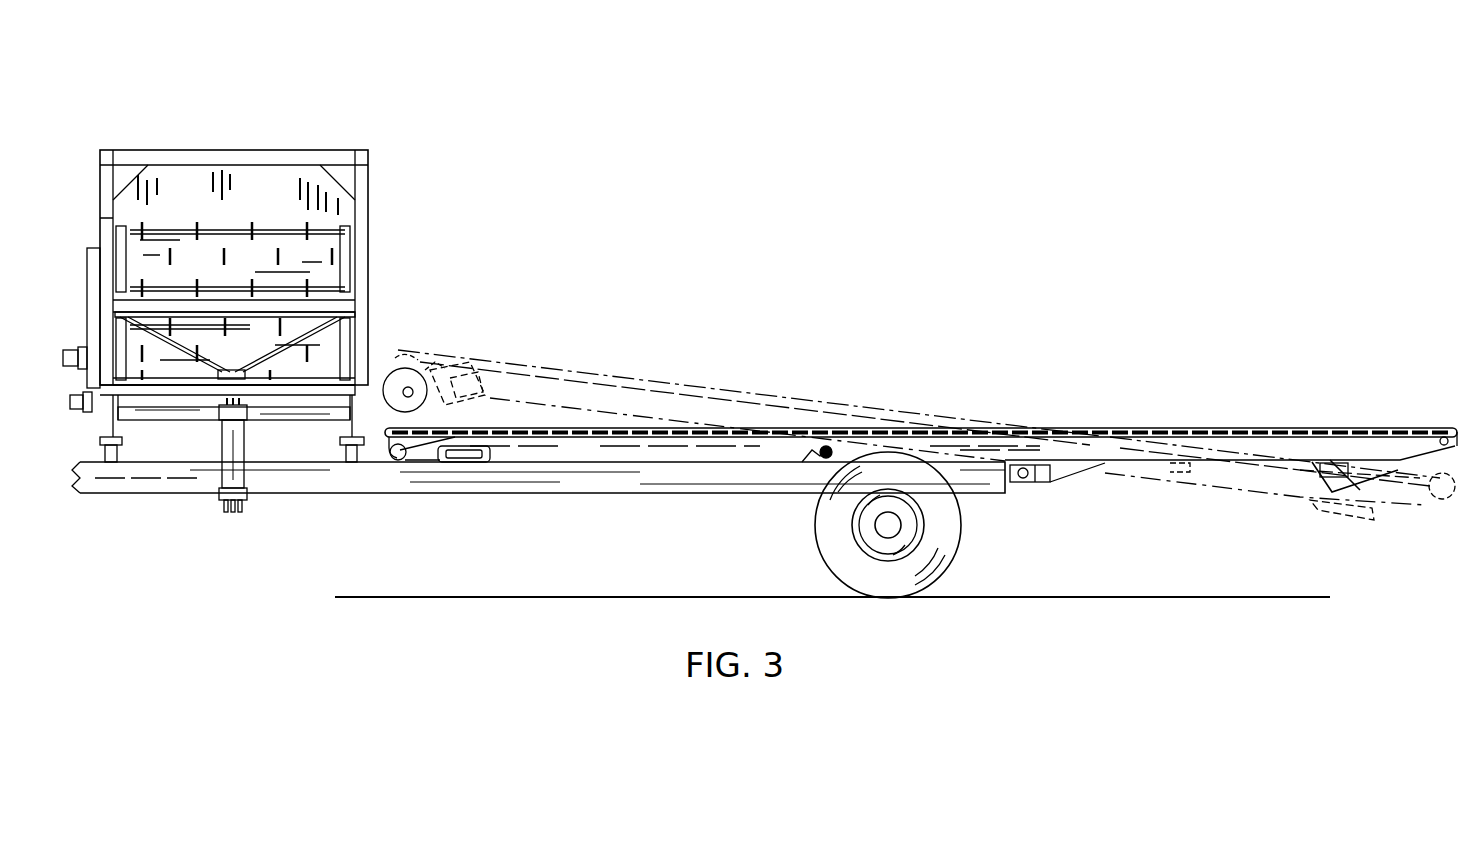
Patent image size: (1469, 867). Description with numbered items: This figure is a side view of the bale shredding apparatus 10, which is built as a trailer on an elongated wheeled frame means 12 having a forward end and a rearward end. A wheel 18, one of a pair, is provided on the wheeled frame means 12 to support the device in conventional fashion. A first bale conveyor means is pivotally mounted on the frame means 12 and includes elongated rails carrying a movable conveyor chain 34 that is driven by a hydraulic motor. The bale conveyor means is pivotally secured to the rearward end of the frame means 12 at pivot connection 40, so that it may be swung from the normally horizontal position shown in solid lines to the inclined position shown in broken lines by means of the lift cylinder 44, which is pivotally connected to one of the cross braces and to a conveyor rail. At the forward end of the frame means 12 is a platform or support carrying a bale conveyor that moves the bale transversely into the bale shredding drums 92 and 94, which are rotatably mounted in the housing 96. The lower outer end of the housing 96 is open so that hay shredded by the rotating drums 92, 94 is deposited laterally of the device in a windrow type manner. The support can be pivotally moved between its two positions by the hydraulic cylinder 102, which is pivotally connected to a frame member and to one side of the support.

The bale shredding apparatus 10 is at (615, 160).
The wheeled frame means 12 is at (582, 496).
The wheel 18 is at (932, 565).
The conveyor chain 34 is at (1290, 428).
The pivot connection 40 is at (1022, 478).
The lift cylinder 44 is at (812, 455).
The bale shredding drum 92 is at (290, 330).
The bale shredding drum 94 is at (294, 252).
The housing 96 is at (303, 150).
The hydraulic cylinder 102 is at (242, 443).